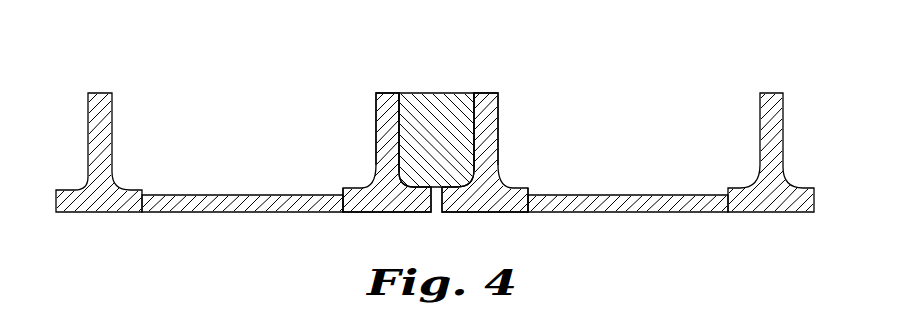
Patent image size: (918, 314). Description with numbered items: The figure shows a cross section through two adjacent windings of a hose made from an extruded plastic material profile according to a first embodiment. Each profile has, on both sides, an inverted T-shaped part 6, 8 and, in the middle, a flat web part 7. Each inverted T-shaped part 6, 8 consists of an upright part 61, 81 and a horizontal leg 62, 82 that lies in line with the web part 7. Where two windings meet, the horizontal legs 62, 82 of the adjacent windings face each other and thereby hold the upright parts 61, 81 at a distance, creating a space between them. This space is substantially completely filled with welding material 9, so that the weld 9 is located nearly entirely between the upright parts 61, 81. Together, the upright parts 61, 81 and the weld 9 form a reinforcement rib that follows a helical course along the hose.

The inverted T-shaped part 6 is at (105, 138).
The flat web part 7 is at (258, 197).
The inverted T-shaped part 8 is at (563, 154).
The welding material 9 is at (428, 107).
The upright part 61 is at (490, 102).
The horizontal leg 62 is at (495, 208).
The upright part 81 is at (381, 91).
The horizontal leg 82 is at (387, 208).